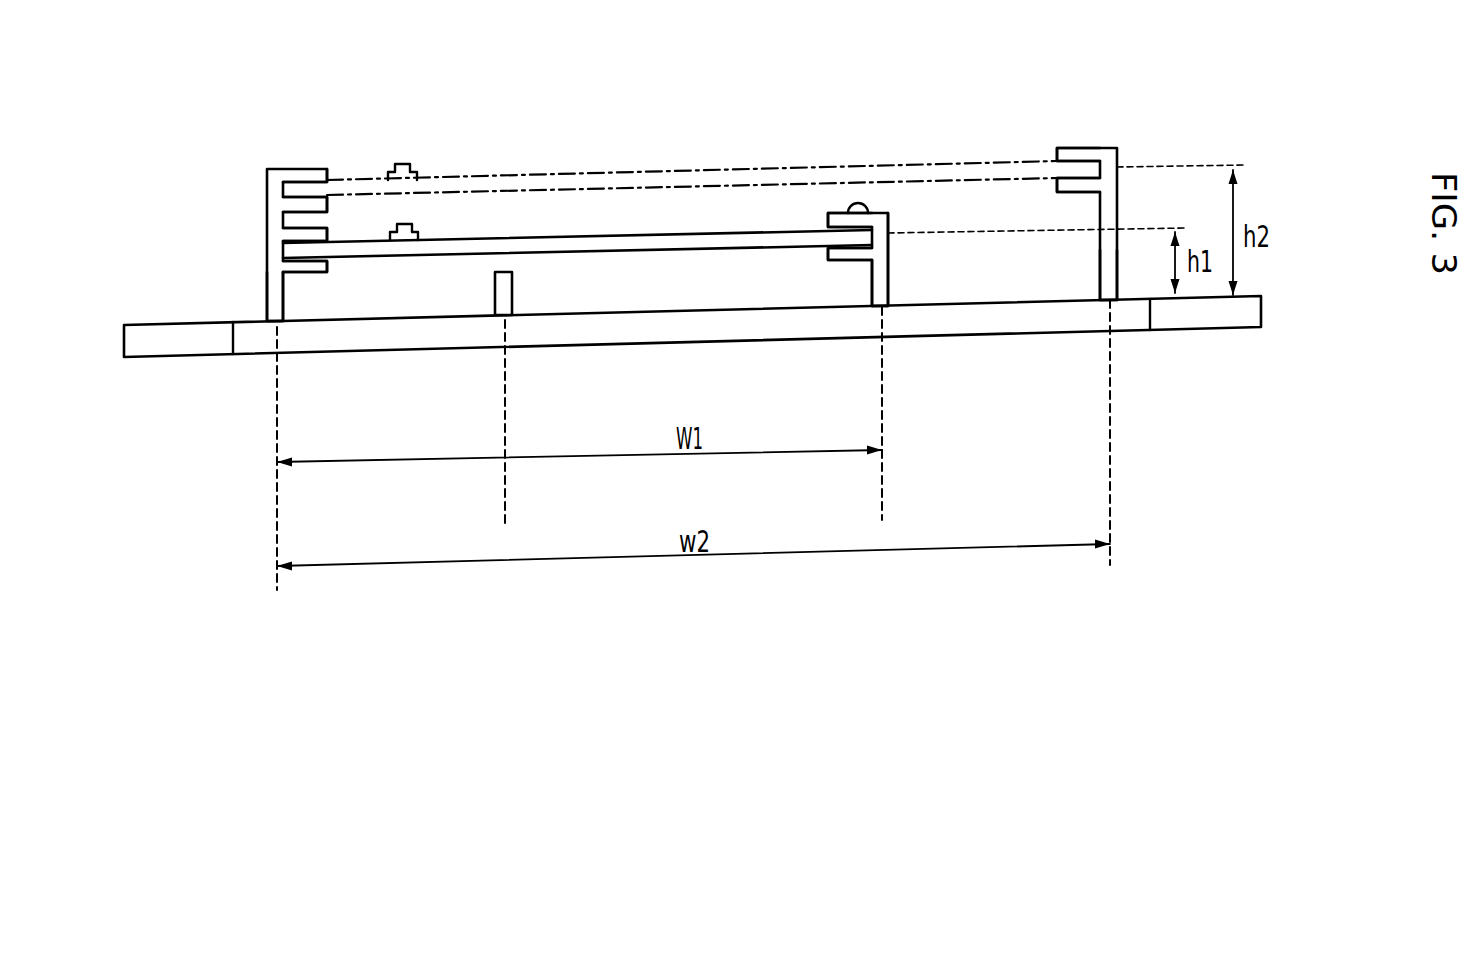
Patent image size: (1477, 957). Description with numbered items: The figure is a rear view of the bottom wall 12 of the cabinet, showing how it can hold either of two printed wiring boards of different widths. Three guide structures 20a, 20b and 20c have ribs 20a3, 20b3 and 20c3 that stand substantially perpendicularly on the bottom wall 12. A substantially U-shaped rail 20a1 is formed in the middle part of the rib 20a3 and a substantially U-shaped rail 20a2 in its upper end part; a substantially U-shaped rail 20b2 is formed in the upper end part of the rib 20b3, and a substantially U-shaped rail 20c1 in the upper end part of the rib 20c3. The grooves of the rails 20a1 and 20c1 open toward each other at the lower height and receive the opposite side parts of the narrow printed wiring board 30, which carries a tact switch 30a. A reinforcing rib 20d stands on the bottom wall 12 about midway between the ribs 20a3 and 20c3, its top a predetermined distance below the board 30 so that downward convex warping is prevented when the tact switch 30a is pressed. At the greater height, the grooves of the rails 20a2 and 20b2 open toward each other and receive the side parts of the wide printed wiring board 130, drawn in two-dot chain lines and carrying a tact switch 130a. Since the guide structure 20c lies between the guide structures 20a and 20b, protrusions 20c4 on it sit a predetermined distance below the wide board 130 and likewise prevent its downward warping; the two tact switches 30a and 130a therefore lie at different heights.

The bottom wall 12 is at (642, 345).
The guide structure 20a is at (249, 262).
The substantially U-shaped rail 20a1 is at (300, 233).
The substantially U-shaped rail 20a2 is at (328, 207).
The rib 20a3 is at (267, 298).
The guide structure 20b is at (1094, 245).
The substantially U-shaped rail 20b2 is at (1060, 186).
The rib 20b3 is at (1115, 263).
The guide structure 20c is at (892, 249).
The substantially U-shaped rail 20c1 is at (828, 215).
The rib 20c3 is at (888, 252).
The protrusion 20c4 is at (853, 203).
The reinforcing rib 20d is at (495, 297).
The narrow printed wiring board 30 is at (577, 265).
The tact switch 30a is at (417, 232).
The wide printed wiring board 130 is at (692, 108).
The tact switch 130a is at (405, 155).